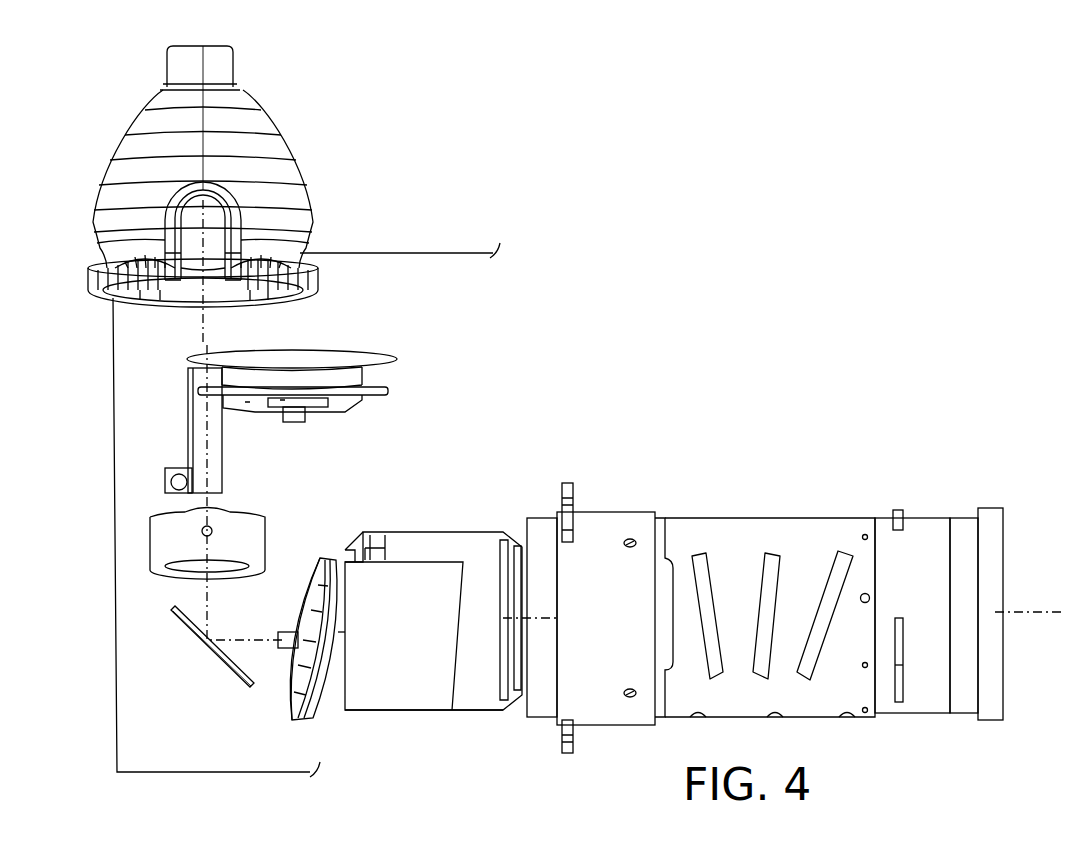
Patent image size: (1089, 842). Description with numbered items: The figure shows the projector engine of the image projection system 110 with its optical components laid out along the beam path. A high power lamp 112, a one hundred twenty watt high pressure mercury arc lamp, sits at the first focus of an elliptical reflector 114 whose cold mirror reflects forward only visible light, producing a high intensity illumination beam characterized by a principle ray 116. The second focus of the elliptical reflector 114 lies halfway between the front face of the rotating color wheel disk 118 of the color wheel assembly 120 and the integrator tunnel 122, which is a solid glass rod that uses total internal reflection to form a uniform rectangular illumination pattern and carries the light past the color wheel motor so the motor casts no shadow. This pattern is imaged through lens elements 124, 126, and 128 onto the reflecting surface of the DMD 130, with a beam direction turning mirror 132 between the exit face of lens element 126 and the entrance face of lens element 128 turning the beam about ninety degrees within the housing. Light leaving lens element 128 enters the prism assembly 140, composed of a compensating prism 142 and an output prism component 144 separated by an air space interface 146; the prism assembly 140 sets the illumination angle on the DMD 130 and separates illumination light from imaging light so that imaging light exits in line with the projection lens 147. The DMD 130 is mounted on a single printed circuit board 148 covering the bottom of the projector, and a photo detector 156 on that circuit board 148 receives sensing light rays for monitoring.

The image projection system 110 is at (572, 392).
The high power lamp 112 is at (228, 68).
The elliptical reflector 114 is at (278, 146).
The principle ray 116 is at (207, 321).
The rotating color wheel disk 118 is at (370, 352).
The color wheel assembly 120 is at (404, 378).
The integrator tunnel 122 is at (222, 457).
The lens element 124 is at (228, 508).
The lens element 126 is at (224, 575).
The lens element 128 is at (290, 668).
The DMD 130 is at (378, 556).
The beam direction turning mirror 132 is at (202, 645).
The prism assembly 140 is at (415, 742).
The compensating prism 142 is at (378, 712).
The output prism component 144 is at (477, 712).
The air space interface 146 is at (458, 613).
The projection lens 147 is at (766, 525).
The printed circuit board 148 is at (130, 632).
The photo detector 156 is at (174, 474).